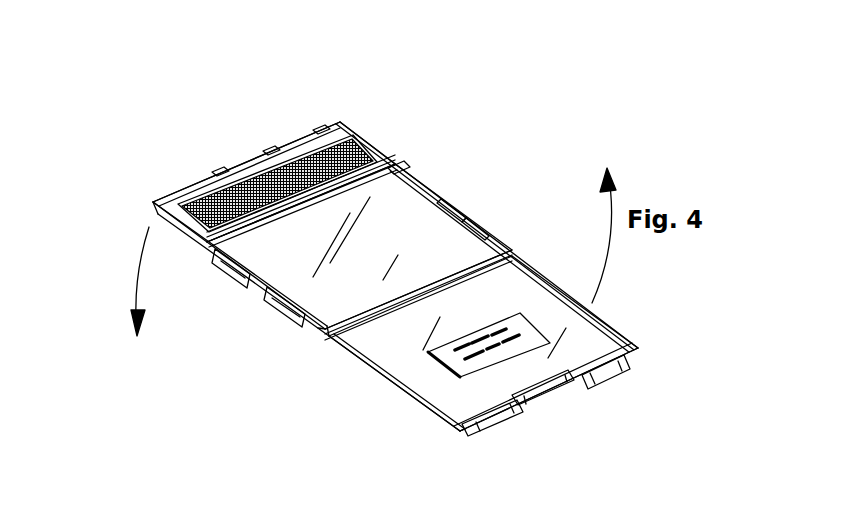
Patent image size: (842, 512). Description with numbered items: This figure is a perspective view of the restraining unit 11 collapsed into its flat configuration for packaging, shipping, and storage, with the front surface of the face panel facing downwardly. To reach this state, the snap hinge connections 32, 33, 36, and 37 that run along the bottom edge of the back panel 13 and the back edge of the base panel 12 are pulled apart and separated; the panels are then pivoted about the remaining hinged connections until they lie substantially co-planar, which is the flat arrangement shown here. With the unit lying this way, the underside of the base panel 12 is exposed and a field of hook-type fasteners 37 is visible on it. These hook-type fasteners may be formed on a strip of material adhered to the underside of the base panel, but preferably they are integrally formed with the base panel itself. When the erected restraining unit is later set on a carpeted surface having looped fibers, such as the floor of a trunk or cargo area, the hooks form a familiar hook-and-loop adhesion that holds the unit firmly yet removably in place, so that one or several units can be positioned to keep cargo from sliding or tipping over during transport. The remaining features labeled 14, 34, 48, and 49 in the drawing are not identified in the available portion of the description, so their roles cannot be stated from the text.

The restraining unit 11 is at (590, 83).
The base panel 12 is at (360, 132).
The back panel 13 is at (418, 224).
The third panel 14 is at (533, 300).
The snap hinge connection 32 is at (490, 437).
The snap hinge connection 33 is at (593, 390).
The mesh / speaker grille 34 is at (200, 210).
The snap hinge connection 36 is at (291, 146).
The hook-type fasteners 37 is at (200, 212).
The folding direction arrow 48 is at (135, 272).
The folding direction arrow 49 is at (609, 257).